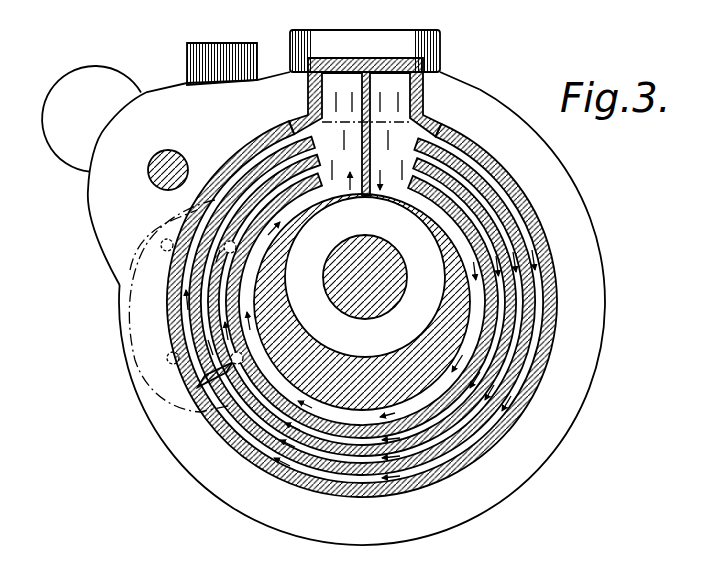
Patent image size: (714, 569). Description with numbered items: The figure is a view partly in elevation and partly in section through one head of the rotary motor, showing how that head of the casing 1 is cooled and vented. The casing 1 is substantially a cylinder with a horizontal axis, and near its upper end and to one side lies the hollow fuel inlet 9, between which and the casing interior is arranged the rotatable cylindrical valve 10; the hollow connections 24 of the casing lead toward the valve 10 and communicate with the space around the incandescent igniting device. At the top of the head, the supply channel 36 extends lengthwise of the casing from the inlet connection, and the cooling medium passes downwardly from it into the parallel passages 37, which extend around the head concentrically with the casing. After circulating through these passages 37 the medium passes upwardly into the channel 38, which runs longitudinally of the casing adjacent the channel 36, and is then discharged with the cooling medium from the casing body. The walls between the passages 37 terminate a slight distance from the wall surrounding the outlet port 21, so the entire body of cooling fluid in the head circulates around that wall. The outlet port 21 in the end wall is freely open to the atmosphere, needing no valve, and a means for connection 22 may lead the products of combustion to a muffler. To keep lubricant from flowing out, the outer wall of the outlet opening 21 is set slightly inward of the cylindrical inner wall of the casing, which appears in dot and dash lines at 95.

The casing 1 is at (541, 459).
The fuel inlet 9 is at (71, 135).
The valve 10 is at (155, 184).
The outlet port 21 is at (200, 329).
The means for connection 22 is at (160, 395).
The hollow connection 24 is at (197, 62).
The supply channel 36 is at (390, 107).
The parallel passages 37 is at (534, 285).
The channel 38 is at (345, 82).
The cylindrical inner wall of the casing 95 is at (170, 305).